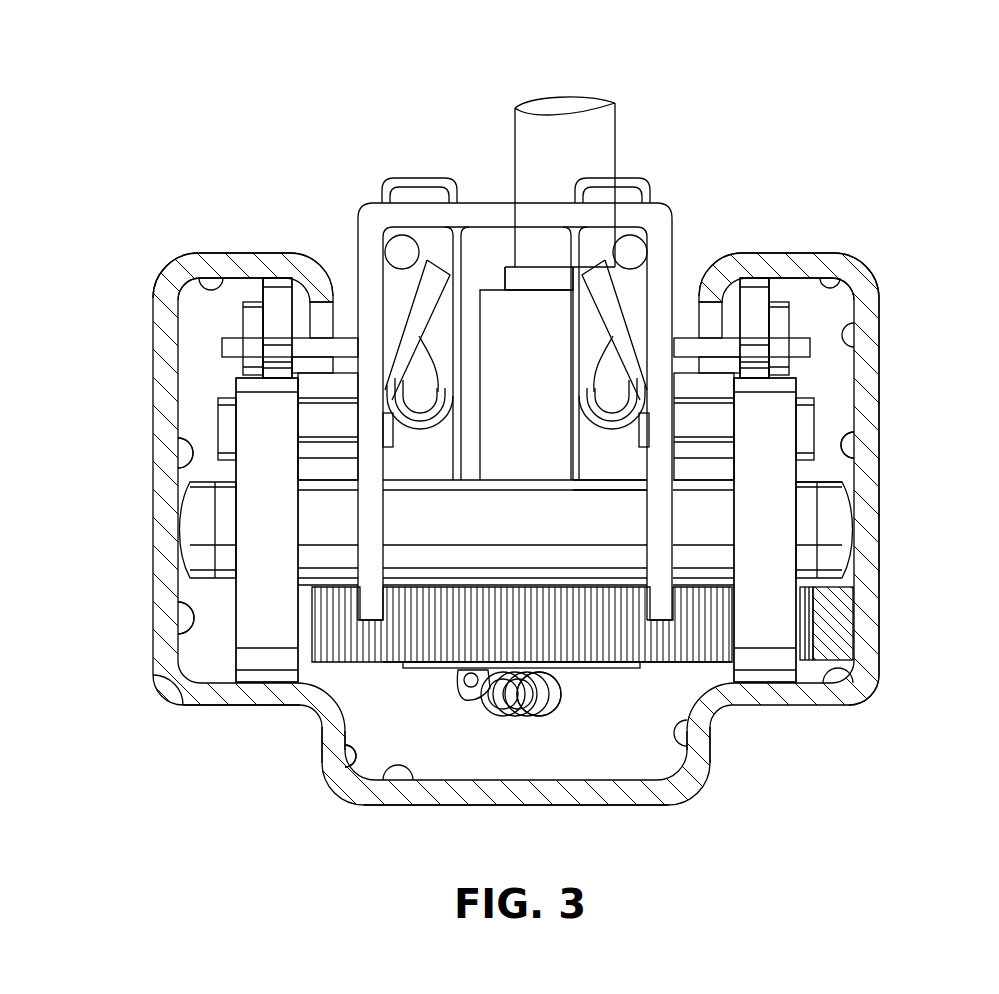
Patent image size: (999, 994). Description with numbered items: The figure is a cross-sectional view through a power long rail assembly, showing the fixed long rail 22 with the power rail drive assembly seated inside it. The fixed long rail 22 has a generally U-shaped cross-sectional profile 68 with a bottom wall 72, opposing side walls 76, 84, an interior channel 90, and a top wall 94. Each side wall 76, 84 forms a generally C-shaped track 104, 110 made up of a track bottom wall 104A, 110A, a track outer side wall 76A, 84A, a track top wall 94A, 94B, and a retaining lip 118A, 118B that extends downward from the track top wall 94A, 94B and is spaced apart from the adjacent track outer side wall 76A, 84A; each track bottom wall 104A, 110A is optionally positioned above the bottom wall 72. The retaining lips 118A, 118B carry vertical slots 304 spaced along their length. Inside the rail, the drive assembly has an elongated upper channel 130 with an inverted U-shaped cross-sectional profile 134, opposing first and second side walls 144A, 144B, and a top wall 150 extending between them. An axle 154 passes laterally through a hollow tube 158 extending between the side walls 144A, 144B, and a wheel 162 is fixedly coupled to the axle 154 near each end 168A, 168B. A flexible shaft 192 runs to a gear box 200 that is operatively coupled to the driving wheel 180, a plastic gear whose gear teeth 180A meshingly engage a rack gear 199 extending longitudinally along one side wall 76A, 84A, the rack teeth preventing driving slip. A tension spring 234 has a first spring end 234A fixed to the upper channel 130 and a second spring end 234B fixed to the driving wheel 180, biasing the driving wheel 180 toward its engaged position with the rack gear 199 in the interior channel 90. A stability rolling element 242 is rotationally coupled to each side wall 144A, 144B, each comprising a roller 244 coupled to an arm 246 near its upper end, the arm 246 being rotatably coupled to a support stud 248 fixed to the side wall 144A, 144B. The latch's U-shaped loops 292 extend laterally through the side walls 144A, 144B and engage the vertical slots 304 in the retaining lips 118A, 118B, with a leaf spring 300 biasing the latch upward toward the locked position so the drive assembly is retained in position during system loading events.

The fixed long rail 22 is at (159, 268).
The top wall 94 is at (217, 252).
The track top wall 94A is at (201, 282).
The track top wall 94B is at (866, 263).
The stability rolling element 242 is at (262, 288).
The roller 244 is at (280, 293).
The arm 246 is at (242, 326).
The support stud 248 is at (220, 422).
The vertical slot 304 is at (283, 323).
The U-shaped loop 292 is at (315, 325).
The wheel 162 is at (235, 597).
The end of axle 168A is at (185, 528).
The end of axle 168B is at (843, 547).
The retaining lip 118A is at (333, 313).
The retaining lip 118B is at (700, 300).
The leaf spring 300 is at (395, 255).
The gear box 200 is at (528, 310).
The upper channel 130 is at (477, 203).
The top wall 150 is at (513, 265).
The flexible shaft 192 is at (618, 125).
The first side wall 144A is at (375, 505).
The second side wall 144B is at (662, 514).
The hollow tube 158 is at (797, 662).
The inverted U-shaped cross-sectional profile 134 is at (707, 580).
The driving wheel 180 is at (664, 662).
The gear teeth 180A is at (583, 652).
The tension spring 234 is at (545, 722).
The first spring end 234A is at (477, 680).
The second spring end 234B is at (552, 712).
The rack gear 199 is at (845, 596).
The track 110 is at (812, 478).
The track bottom wall 110A is at (840, 670).
The axle 154 is at (845, 437).
The side wall 84 is at (712, 757).
The track outer side wall 84A is at (868, 345).
The bottom wall 72 is at (390, 805).
The side wall 76 is at (330, 778).
The track outer side wall 76A is at (178, 622).
The interior channel 90 is at (385, 720).
The U-shaped cross-sectional profile 68 is at (205, 702).
The track 104 is at (178, 458).
The track bottom wall 104A is at (195, 690).